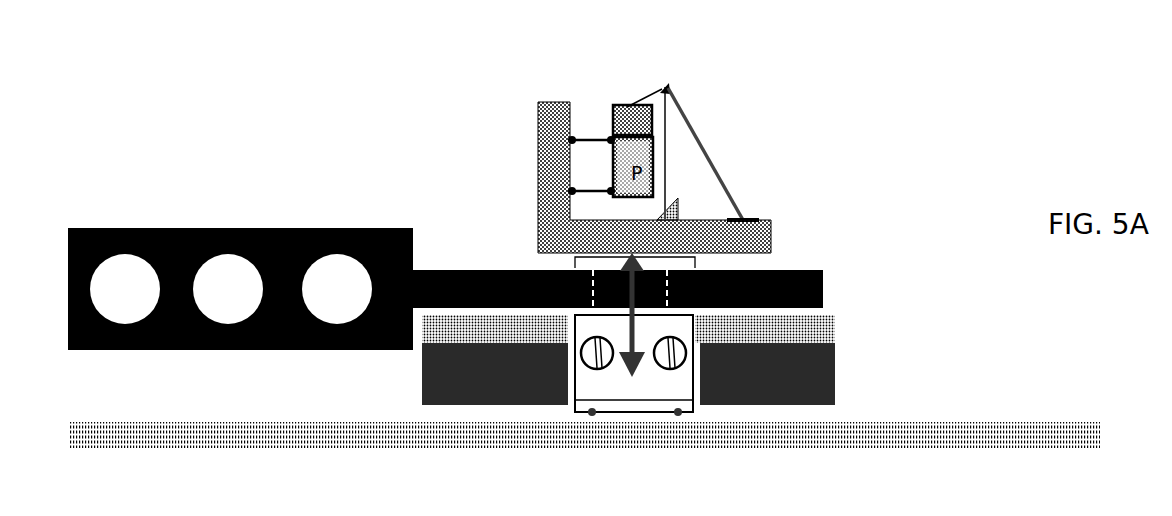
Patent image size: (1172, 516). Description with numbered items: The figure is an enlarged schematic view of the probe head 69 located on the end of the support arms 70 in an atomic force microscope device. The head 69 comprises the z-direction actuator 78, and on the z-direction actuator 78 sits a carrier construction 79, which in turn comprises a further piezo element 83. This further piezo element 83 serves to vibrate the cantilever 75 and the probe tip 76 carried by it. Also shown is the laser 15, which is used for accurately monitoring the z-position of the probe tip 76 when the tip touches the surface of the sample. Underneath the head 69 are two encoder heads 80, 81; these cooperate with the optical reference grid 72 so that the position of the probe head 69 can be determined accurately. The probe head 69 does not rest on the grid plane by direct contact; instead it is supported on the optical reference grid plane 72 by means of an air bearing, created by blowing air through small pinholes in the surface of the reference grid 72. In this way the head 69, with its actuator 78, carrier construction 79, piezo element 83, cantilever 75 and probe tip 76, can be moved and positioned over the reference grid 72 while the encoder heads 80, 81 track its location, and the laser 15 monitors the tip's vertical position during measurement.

The laser 15 is at (707, 157).
The head 69 is at (823, 287).
The support arms 70 is at (223, 227).
The optical reference grid 72 is at (975, 422).
The cantilever 75 is at (628, 105).
The probe tip 76 is at (668, 85).
The z-direction actuator 78 is at (640, 390).
The carrier construction 79 is at (538, 137).
The encoder head 80 is at (422, 382).
The encoder head 81 is at (835, 383).
The further piezo element 83 is at (613, 120).